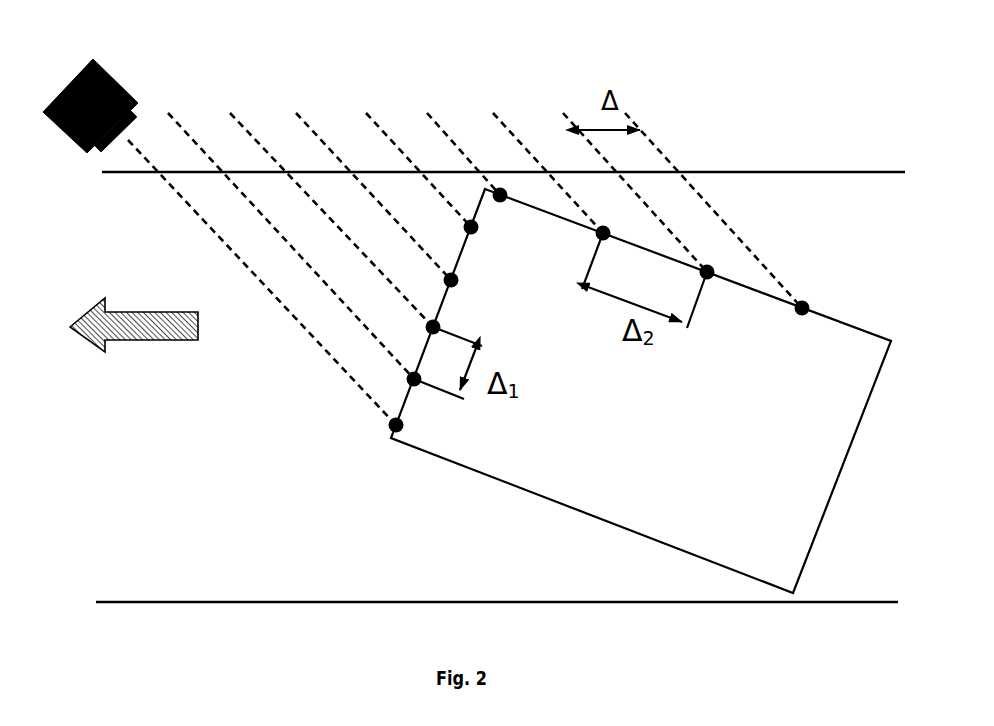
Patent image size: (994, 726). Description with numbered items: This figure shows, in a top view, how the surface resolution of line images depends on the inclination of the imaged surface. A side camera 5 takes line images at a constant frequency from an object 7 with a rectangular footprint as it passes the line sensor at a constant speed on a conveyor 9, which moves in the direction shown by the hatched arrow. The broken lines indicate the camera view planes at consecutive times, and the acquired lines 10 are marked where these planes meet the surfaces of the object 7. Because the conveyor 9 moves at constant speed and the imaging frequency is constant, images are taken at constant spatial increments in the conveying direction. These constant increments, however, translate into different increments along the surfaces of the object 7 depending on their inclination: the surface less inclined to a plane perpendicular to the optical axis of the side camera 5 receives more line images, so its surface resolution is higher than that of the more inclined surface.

The side camera 5 is at (128, 84).
The object 7 is at (692, 496).
The conveyor 9 is at (229, 407).
The acquired lines 10 is at (385, 431).